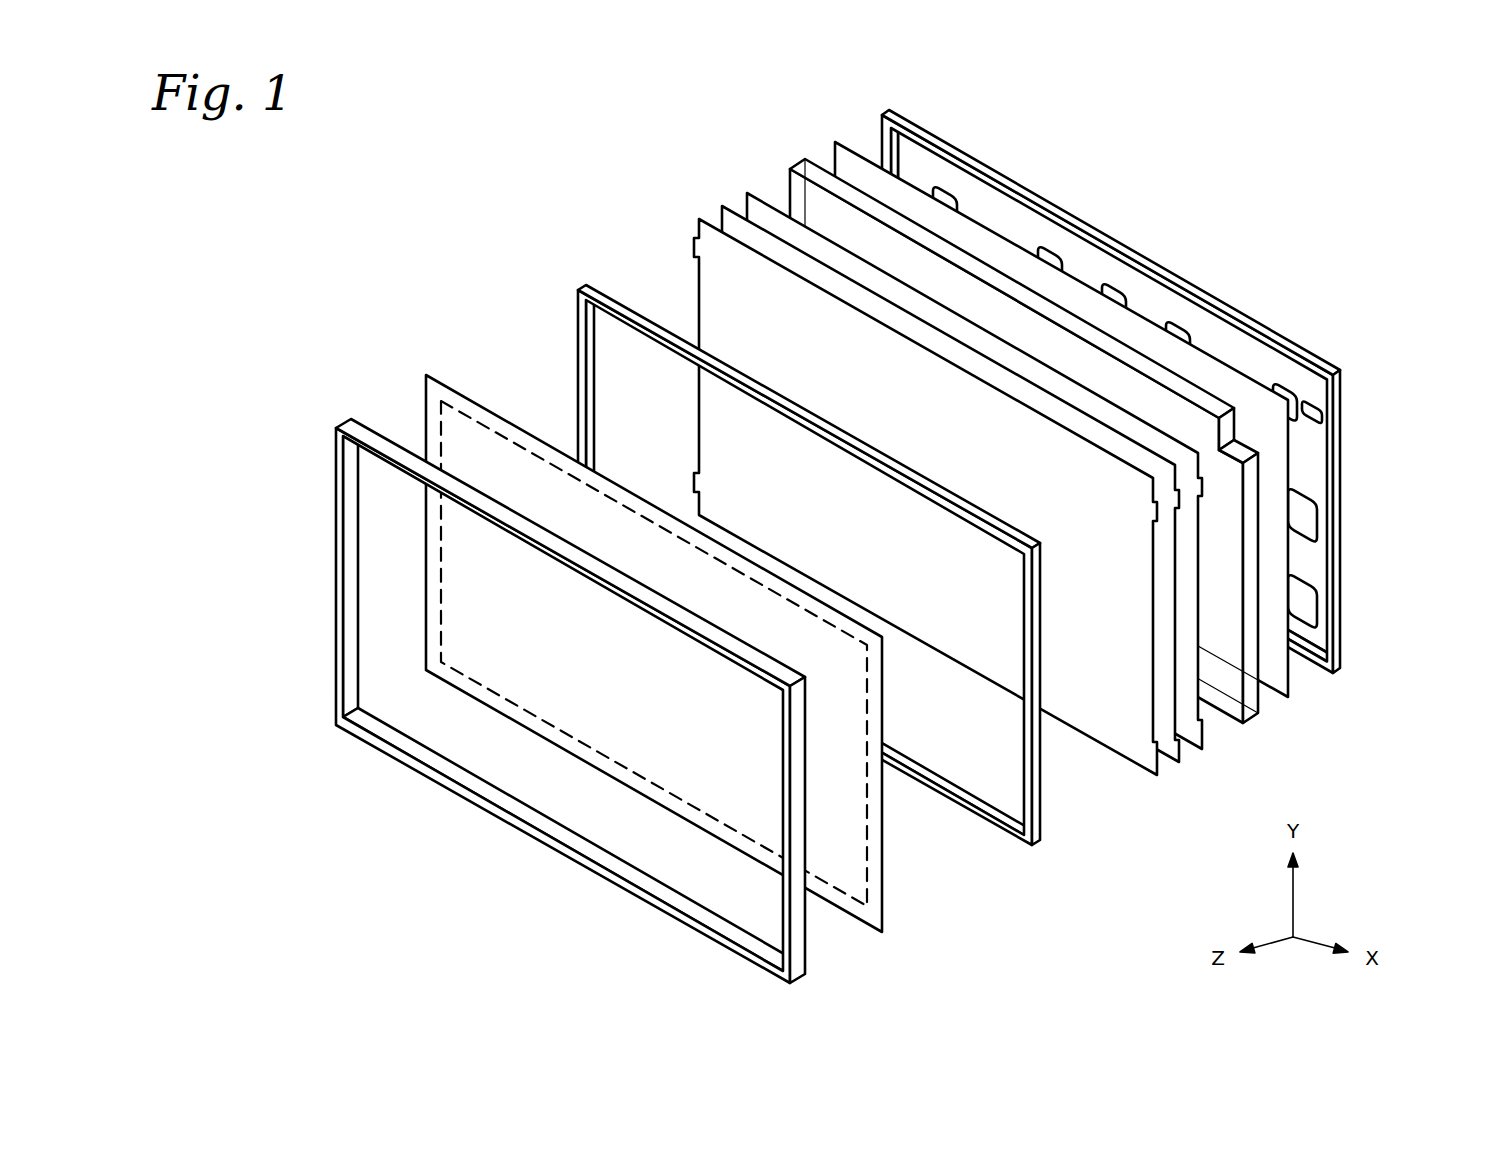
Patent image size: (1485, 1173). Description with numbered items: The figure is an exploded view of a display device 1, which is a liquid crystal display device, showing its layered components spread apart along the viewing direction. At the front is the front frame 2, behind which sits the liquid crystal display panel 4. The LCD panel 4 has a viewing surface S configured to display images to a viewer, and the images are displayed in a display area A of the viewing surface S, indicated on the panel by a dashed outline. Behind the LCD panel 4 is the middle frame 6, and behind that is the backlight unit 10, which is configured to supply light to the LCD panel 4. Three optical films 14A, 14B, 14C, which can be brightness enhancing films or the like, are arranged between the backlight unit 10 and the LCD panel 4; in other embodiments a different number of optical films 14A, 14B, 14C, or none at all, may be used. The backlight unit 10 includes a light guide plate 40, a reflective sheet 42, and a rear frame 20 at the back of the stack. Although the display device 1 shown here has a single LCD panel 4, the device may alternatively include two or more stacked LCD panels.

The display device 1 is at (440, 203).
The front frame 2 is at (343, 420).
The liquid crystal display (LCD) panel 4 is at (481, 402).
The middle frame 6 is at (578, 287).
The backlight unit 10 is at (739, 131).
The optical film 14A is at (697, 280).
The optical film 14B is at (722, 205).
The optical film 14C is at (747, 192).
The light guide plate 40 is at (1252, 721).
The reflective sheet 42 is at (1288, 688).
The rear frame 20 is at (1341, 636).
The display area A is at (866, 802).
The viewing surface S is at (841, 820).